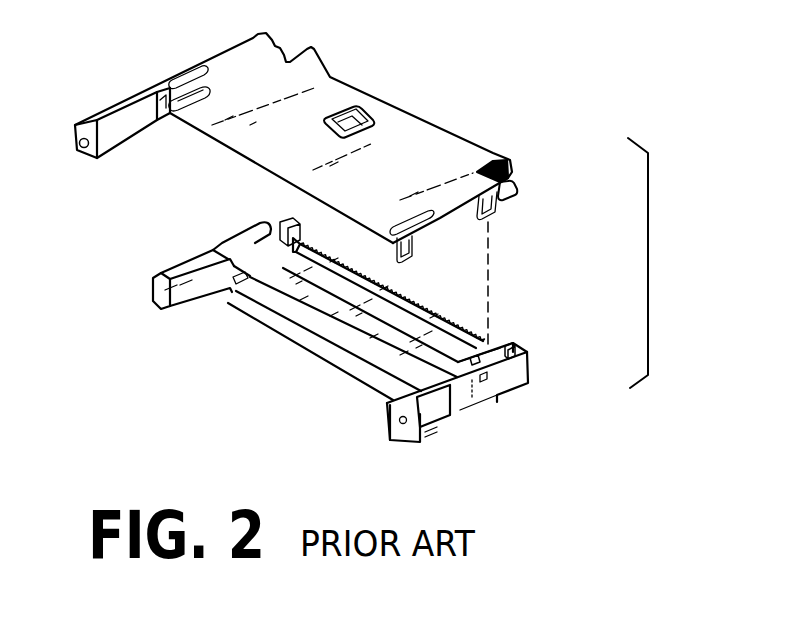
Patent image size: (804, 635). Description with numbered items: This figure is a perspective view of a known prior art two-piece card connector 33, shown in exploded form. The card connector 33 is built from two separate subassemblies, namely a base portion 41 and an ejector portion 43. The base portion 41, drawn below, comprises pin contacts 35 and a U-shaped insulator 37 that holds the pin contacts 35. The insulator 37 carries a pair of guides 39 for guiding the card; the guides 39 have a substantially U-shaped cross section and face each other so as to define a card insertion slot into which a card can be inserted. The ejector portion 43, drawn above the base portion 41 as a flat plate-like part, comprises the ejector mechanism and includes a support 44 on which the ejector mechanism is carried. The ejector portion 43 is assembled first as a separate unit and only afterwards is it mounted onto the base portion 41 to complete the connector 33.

The two-piece card connector 33 is at (500, 112).
The pin contacts 35 is at (432, 306).
The U-shaped insulator 37 is at (465, 395).
The guides 39 is at (195, 300).
The base portion 41 is at (494, 340).
The ejector portion 43 is at (296, 145).
The support 44 is at (330, 97).